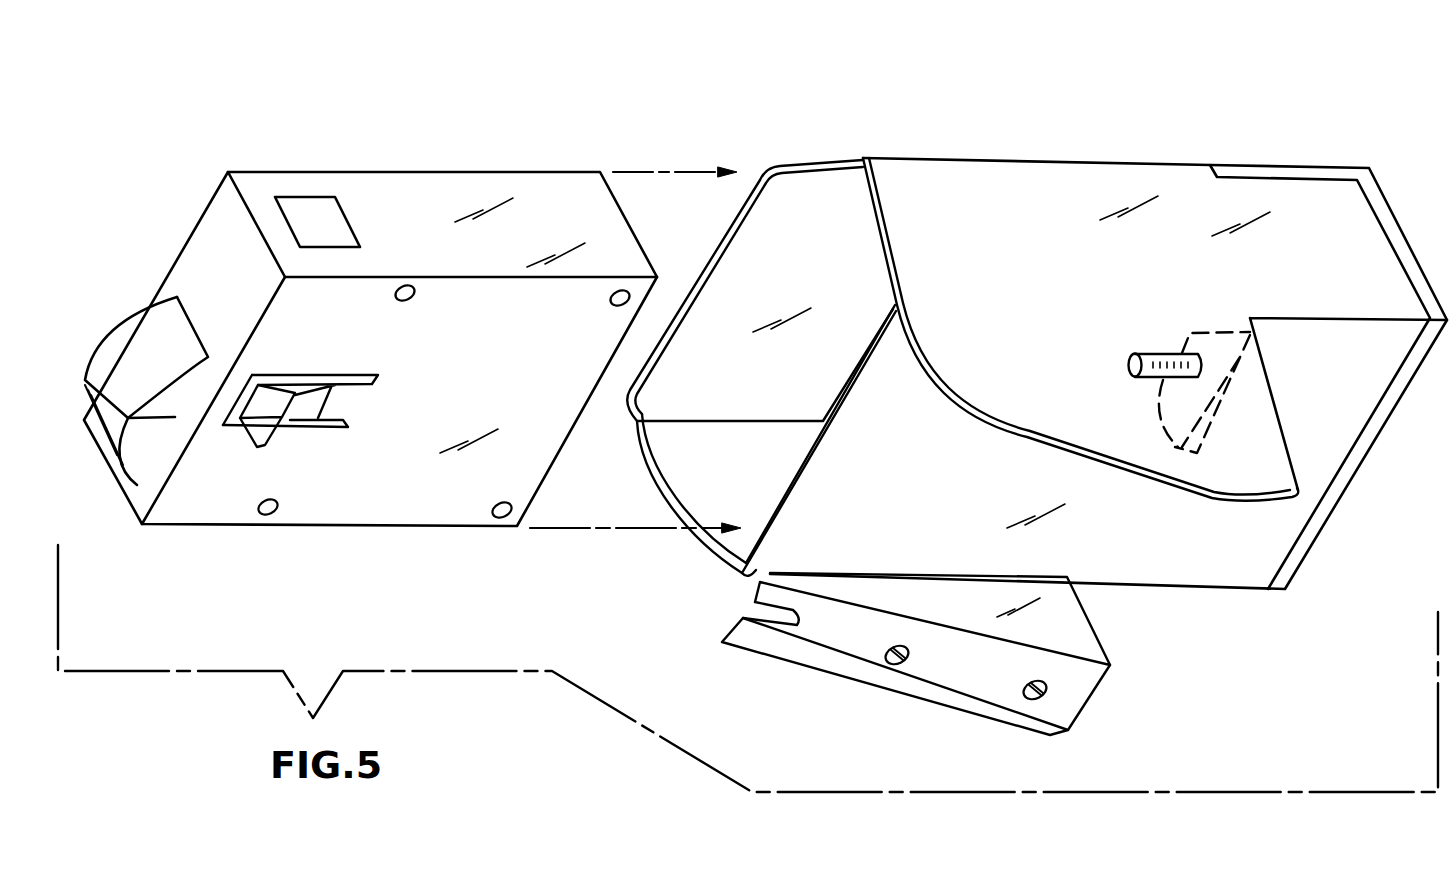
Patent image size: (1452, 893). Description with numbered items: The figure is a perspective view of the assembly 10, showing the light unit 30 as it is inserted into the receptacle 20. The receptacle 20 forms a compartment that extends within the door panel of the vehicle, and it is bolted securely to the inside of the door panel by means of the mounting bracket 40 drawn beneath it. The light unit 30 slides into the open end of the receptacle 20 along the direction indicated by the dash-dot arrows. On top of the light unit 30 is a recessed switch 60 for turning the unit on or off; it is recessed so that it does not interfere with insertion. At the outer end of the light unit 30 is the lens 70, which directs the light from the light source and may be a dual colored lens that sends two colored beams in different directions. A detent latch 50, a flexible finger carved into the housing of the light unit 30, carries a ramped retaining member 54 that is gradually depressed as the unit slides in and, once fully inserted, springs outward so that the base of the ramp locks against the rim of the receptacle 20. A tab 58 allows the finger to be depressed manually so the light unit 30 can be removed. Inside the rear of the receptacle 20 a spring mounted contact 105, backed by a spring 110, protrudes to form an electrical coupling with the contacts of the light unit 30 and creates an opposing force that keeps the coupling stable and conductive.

The assembly 10 is at (1031, 120).
The receptacle 20 is at (1232, 592).
The light unit 30 is at (396, 138).
The mounting bracket 40 is at (1088, 703).
The detent latch 50 is at (300, 463).
The ramped retaining member 54 is at (294, 418).
The tab 58 is at (243, 442).
The recessed switch 60 is at (303, 200).
The lens 70 is at (113, 342).
The spring mounted contact 105 is at (1127, 360).
The spring 110 is at (1162, 355).